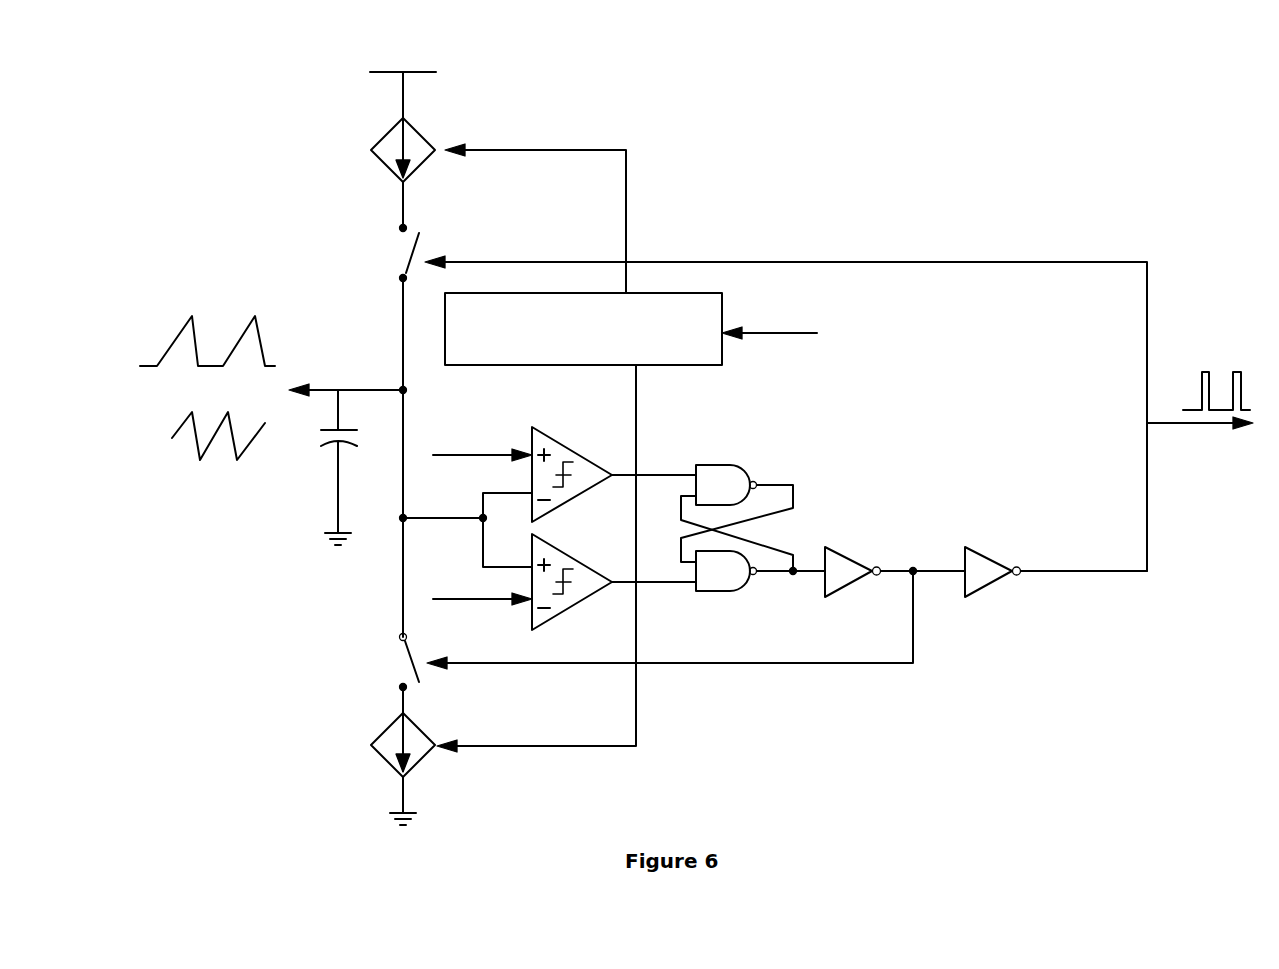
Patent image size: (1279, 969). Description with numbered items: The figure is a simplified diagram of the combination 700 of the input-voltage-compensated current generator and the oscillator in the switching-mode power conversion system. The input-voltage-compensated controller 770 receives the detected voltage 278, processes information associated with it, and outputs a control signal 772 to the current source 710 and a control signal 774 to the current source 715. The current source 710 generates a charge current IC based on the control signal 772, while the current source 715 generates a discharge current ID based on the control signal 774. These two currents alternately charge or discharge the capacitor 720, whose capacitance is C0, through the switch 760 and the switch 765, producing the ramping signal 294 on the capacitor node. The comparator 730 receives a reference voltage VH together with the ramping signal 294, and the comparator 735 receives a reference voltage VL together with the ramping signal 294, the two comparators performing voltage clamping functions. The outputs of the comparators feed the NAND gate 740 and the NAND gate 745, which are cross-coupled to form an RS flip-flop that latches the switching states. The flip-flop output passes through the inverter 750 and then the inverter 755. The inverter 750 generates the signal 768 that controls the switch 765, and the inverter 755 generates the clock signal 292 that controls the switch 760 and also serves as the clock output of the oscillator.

The combination of the current generator and the oscillator 700 is at (257, 134).
The current source 710 is at (418, 132).
The current source 715 is at (425, 753).
The capacitor 720 is at (343, 440).
The comparator 730 is at (542, 432).
The comparator 735 is at (565, 615).
The NAND gate 740 is at (745, 470).
The NAND gate 745 is at (748, 585).
The inverter 750 is at (862, 580).
The inverter 755 is at (980, 580).
The switch 760 is at (421, 240).
The switch 765 is at (423, 675).
The signal 768 is at (817, 665).
The input-voltage-compensated controller 770 is at (705, 367).
The control signal 772 is at (562, 148).
The control signal 774 is at (563, 750).
The detected voltage 278 is at (779, 330).
The clock signal 292 is at (1180, 428).
The ramping signal 294 is at (322, 395).